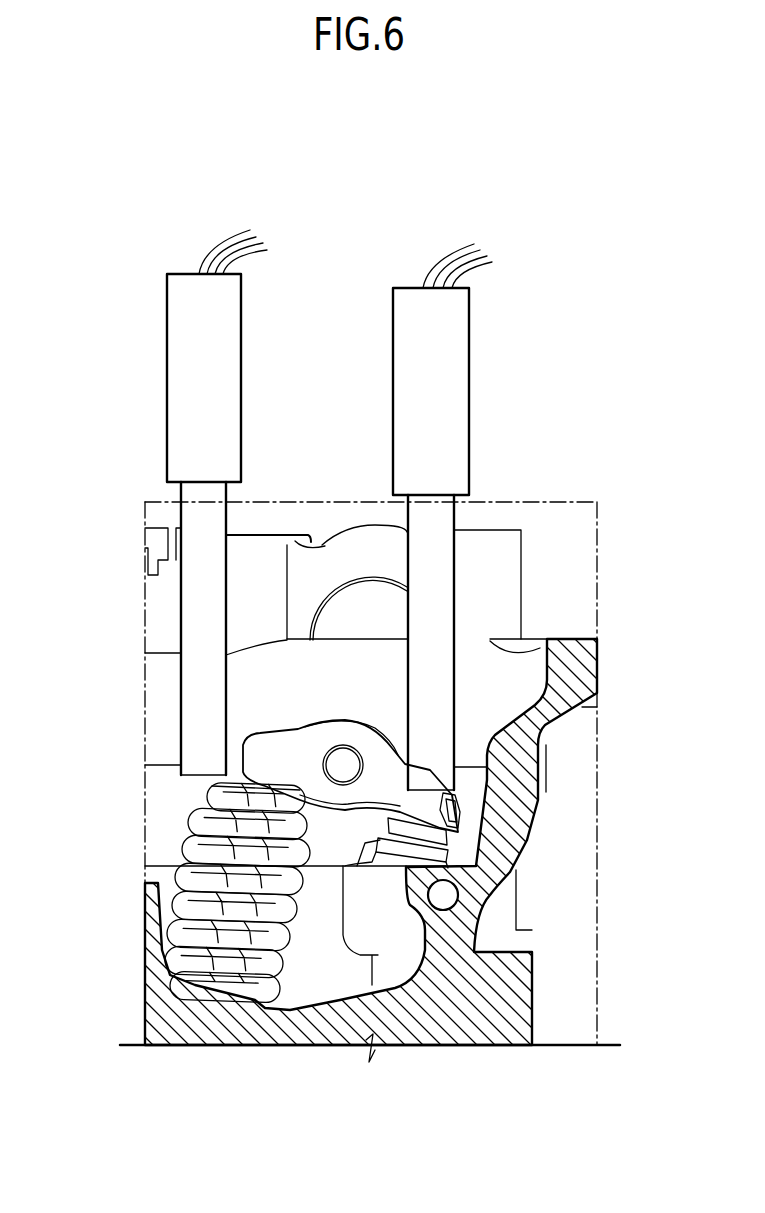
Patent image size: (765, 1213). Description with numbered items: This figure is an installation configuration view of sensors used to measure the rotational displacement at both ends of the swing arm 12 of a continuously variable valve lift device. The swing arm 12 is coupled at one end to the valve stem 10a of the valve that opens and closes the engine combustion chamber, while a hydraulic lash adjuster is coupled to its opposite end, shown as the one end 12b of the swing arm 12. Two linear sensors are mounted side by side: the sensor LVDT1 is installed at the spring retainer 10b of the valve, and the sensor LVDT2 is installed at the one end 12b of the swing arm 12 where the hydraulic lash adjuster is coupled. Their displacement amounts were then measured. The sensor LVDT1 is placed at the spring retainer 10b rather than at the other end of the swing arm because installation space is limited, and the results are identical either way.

The sensor LVDT1 is at (241, 377).
The sensor LVDT2 is at (469, 390).
The swing arm 12 is at (292, 736).
The one end of the swing arm 12b is at (456, 803).
The valve stem 10a is at (195, 880).
The spring retainer 10b is at (205, 795).